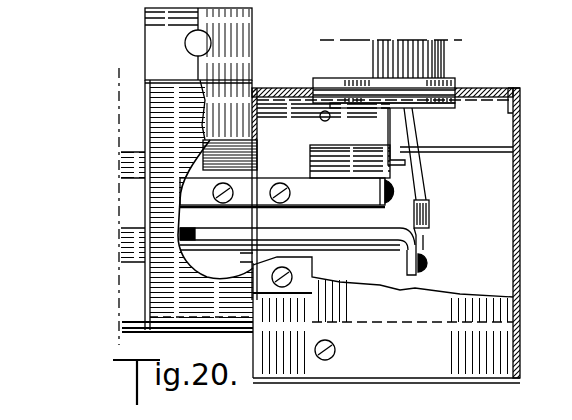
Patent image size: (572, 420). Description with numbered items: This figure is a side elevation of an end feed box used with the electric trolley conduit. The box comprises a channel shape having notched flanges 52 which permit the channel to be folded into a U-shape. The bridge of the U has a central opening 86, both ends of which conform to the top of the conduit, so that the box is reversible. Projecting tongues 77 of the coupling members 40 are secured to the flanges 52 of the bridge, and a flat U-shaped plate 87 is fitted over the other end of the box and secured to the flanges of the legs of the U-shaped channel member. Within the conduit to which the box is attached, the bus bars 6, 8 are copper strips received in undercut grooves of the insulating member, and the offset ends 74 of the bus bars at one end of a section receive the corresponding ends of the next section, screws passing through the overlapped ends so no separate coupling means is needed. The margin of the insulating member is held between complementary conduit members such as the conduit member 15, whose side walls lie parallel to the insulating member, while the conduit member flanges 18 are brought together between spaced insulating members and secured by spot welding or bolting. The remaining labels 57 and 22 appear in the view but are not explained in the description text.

The conduit member flanges 18 is at (132, 98).
The conduit member 15 is at (135, 153).
The coupling members 40 is at (160, 293).
The central opening 86 is at (258, 146).
The bus bar 6 is at (247, 193).
The bus bar 8 is at (227, 243).
The offset ends 74 is at (312, 240).
The projecting tongues 77 is at (300, 282).
The notched flanges 52 is at (465, 130).
The flat U-shaped plate 87 is at (520, 175).
The casing member 57 is at (562, 91).
The base plate 22 is at (571, 257).